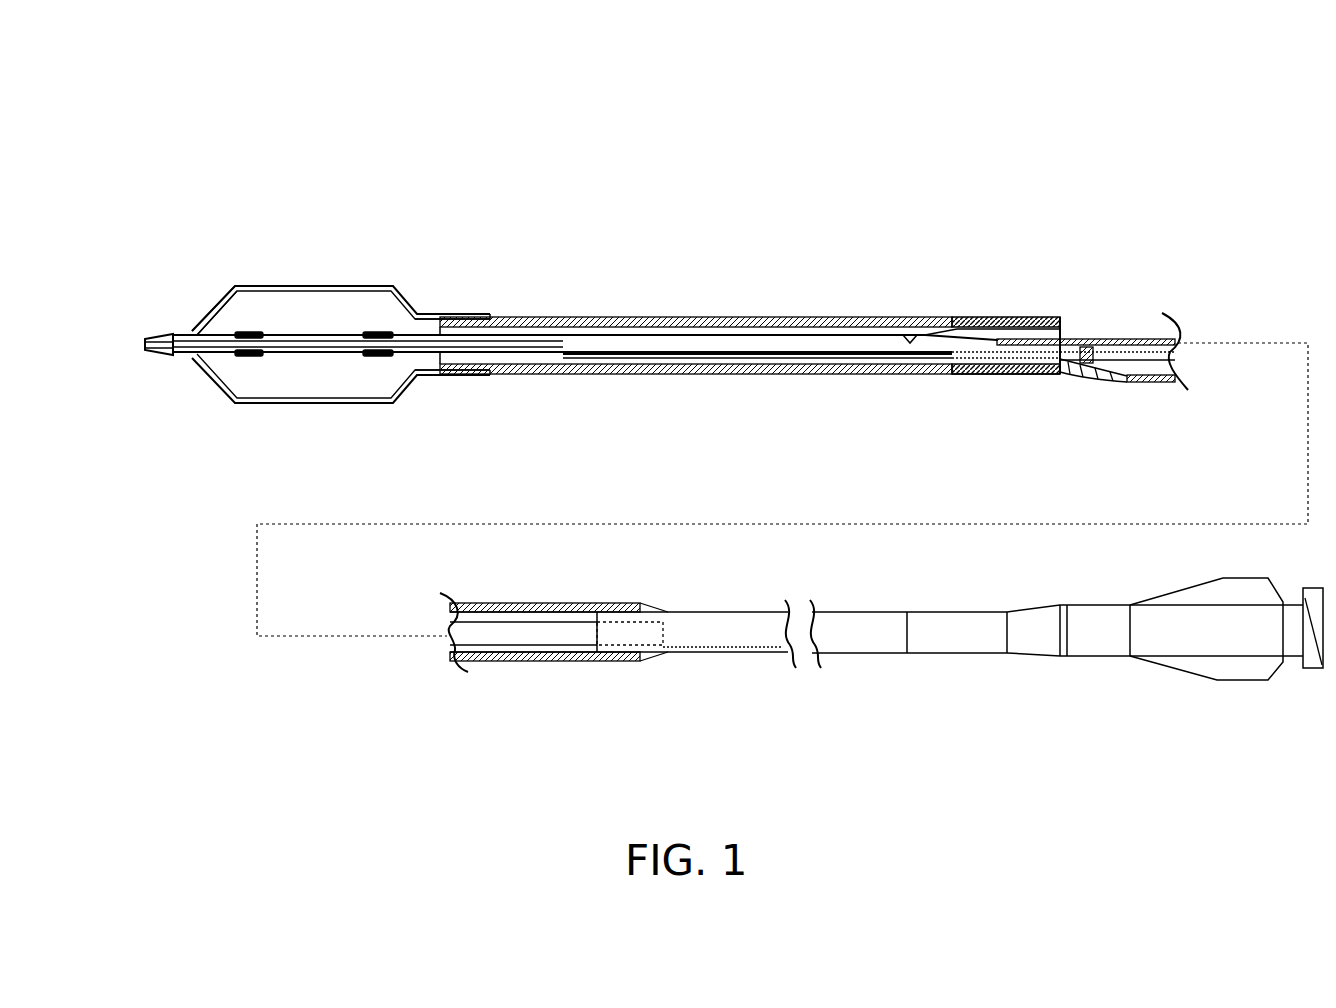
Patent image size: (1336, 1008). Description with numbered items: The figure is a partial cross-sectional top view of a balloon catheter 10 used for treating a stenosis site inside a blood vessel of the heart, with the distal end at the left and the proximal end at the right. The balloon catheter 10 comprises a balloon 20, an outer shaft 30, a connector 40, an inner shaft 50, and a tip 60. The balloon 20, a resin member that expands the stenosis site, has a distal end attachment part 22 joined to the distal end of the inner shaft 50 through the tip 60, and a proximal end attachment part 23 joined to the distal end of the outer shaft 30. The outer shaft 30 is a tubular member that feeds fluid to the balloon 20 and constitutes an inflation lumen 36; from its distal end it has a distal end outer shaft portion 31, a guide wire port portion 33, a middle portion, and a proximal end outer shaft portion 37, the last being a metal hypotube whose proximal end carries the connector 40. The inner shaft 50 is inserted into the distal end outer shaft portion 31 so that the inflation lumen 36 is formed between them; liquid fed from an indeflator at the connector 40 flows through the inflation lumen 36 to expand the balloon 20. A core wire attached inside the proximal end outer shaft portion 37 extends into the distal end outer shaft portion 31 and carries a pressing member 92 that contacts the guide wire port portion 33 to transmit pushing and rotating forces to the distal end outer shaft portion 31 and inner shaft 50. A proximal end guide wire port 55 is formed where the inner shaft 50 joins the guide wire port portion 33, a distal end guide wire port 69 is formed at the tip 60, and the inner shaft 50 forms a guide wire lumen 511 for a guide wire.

The balloon catheter 10 is at (870, 131).
The balloon 20 is at (341, 268).
The distal end attachment part 22 is at (167, 255).
The proximal end attachment part 23 is at (461, 263).
The outer shaft 30 is at (696, 260).
The distal end outer shaft portion 31 is at (811, 431).
The guide wire port portion 33 is at (1006, 444).
The inflation lumen 36 is at (887, 249).
The proximal end outer shaft portion 37 is at (1057, 715).
The connector 40 is at (1220, 703).
The inner shaft 50 is at (674, 243).
The guide wire lumen 511 is at (985, 243).
The proximal end guide wire port 55 is at (1058, 248).
The tip 60 is at (92, 289).
The distal end guide wire port 69 is at (81, 384).
The pressing member 92 is at (1107, 428).